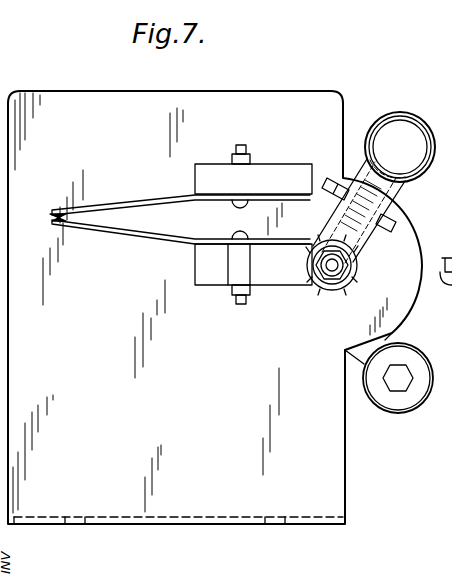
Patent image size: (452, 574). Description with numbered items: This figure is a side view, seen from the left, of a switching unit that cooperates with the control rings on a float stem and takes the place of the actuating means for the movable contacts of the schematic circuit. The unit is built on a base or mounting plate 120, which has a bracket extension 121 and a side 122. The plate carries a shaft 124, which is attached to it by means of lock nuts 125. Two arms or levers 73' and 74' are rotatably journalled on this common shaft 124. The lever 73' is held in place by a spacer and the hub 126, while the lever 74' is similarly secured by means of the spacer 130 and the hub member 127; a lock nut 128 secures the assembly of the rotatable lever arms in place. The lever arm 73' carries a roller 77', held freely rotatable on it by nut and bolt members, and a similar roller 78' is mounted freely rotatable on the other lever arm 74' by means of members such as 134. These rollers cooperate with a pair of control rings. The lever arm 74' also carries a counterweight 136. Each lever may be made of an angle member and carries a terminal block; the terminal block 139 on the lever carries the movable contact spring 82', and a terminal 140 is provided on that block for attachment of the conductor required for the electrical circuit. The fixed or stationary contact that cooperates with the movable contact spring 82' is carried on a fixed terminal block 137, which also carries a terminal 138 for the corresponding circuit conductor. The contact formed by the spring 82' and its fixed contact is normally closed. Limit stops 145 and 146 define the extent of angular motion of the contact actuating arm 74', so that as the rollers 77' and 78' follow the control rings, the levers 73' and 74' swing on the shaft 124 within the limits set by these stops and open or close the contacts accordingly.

The base or mounting plate 120 is at (355, 487).
The bracket extension 121 is at (197, 524).
The side 122 is at (172, 415).
The fixed terminal block 137 is at (278, 170).
The terminal 138 is at (240, 145).
The contact spring 82' is at (180, 220).
The terminal block 139 is at (265, 280).
The terminal 140 is at (232, 292).
The lock nut 128 is at (318, 286).
The lock nut 125 is at (350, 277).
The hub member 127 is at (351, 266).
The shaft 124 is at (335, 280).
The lever arm 74' is at (360, 211).
The limit stop 145 is at (336, 174).
The limit stop 146 is at (392, 226).
The roller 78' is at (400, 136).
The counterweight 136 is at (399, 132).
The lever arm 73' is at (388, 341).
The roller 77' is at (405, 380).
The spacer 130 is at (402, 378).
The hub 126 is at (448, 252).
The nut and bolt member 134 is at (447, 189).